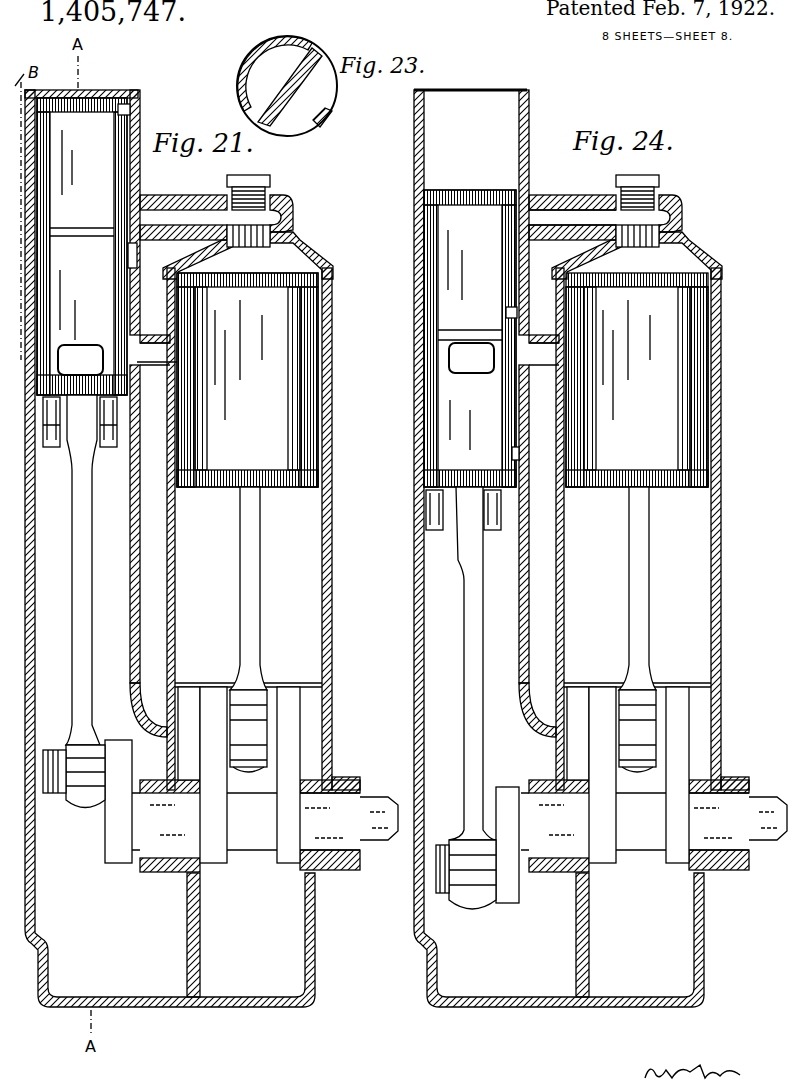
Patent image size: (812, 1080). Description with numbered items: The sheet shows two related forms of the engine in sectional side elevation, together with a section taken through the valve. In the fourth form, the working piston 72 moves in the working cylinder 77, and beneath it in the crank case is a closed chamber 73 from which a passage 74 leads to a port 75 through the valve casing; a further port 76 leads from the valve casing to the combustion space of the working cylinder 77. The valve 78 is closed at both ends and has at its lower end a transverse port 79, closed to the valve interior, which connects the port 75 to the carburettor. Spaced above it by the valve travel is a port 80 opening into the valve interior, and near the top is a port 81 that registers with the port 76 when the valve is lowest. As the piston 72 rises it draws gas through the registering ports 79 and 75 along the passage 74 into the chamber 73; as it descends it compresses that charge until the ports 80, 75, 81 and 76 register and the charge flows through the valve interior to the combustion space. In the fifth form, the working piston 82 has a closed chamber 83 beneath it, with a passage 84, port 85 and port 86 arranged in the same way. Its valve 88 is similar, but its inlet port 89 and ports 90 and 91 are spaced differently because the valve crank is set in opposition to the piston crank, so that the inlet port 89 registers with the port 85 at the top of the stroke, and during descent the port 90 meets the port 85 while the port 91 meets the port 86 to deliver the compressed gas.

In FIG. 21, the working piston 72 is at (277, 373).
In FIG. 21, the closed chamber 73 is at (277, 920).
In FIG. 21, the passage 74 is at (148, 577).
In FIG. 21, the port 75 is at (180, 338).
In FIG. 21, the port 76 is at (153, 217).
In FIG. 21, the working cylinder 77 is at (253, 253).
In FIG. 21, the valve 78 is at (62, 115).
In FIG. 23, the valve 78 is at (267, 63).
In FIG. 21, the transverse port 79 is at (70, 367).
In FIG. 23, the transverse port 79 is at (297, 97).
In FIG. 21, the port 80 is at (131, 262).
In FIG. 21, the port 81 is at (131, 110).
In FIG. 24, the working piston 82 is at (648, 360).
In FIG. 24, the closed chamber 83 is at (646, 917).
In FIG. 24, the passage 84 is at (543, 568).
In FIG. 24, the port 85 is at (576, 324).
In FIG. 24, the port 86 is at (549, 217).
In FIG. 24, the valve 88 is at (439, 288).
In FIG. 24, the inlet port 89 is at (469, 357).
In FIG. 24, the port 90 is at (519, 452).
In FIG. 24, the port 91 is at (518, 312).